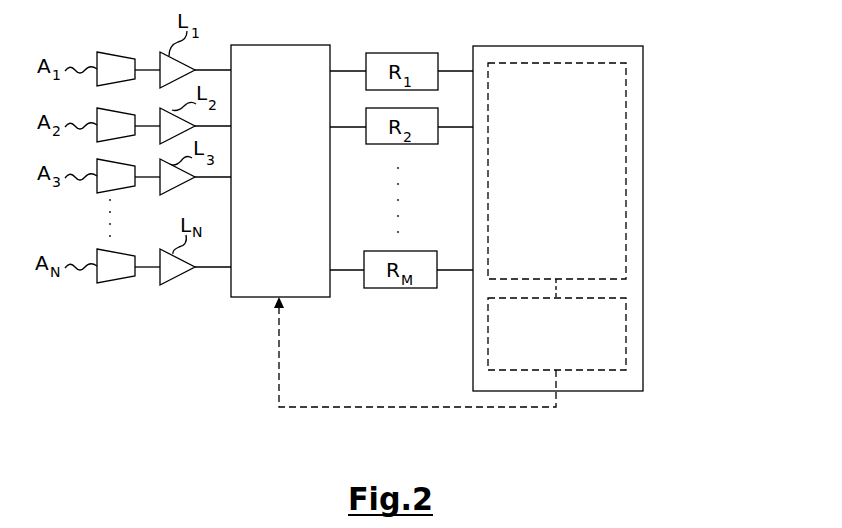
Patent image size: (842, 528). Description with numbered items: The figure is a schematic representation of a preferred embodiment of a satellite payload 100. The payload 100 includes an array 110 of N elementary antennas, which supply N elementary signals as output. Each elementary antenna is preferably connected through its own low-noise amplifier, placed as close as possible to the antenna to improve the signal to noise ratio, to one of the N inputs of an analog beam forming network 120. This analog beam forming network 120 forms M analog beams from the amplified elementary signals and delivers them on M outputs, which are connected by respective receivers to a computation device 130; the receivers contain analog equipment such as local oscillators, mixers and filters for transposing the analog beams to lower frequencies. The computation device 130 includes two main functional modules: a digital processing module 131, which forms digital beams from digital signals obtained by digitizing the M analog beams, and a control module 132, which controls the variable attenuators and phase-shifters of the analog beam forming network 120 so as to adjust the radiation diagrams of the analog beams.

The payload 100 is at (140, 341).
The array of elementary antennas 110 is at (143, 293).
The analog beam forming network 120 is at (280, 171).
The computation device 130 is at (618, 218).
The digital processing module 131 is at (557, 171).
The control module 132 is at (557, 334).